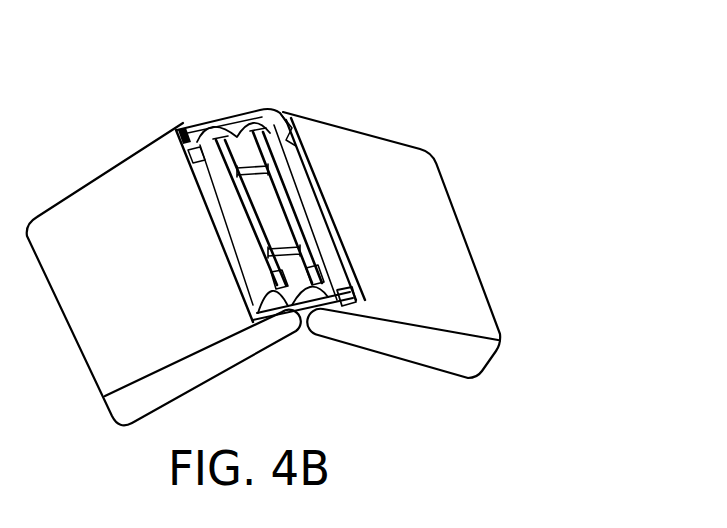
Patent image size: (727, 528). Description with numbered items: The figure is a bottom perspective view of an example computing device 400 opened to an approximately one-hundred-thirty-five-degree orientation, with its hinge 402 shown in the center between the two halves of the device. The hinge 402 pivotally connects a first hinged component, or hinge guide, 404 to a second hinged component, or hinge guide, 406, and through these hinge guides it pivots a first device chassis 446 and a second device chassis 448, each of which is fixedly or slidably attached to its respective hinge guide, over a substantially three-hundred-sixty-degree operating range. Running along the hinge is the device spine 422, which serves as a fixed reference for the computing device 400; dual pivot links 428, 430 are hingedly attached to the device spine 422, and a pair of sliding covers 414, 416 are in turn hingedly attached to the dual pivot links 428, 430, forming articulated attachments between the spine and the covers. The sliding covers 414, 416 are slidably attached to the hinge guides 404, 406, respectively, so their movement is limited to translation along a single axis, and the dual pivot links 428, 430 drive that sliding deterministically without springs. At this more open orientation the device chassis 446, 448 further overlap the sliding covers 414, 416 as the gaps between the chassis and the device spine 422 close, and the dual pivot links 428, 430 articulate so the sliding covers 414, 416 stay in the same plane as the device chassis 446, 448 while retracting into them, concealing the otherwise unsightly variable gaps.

The computing device 400 is at (263, 223).
The hinge 402 is at (257, 242).
The first hinged component 404 is at (253, 298).
The second hinged component 406 is at (322, 284).
The sliding cover 414 is at (197, 122).
The sliding cover 416 is at (293, 157).
The device spine 422 is at (295, 174).
The dual pivot link 428 is at (227, 187).
The dual pivot link 430 is at (307, 232).
The first device chassis 446 is at (143, 256).
The second device chassis 448 is at (440, 300).